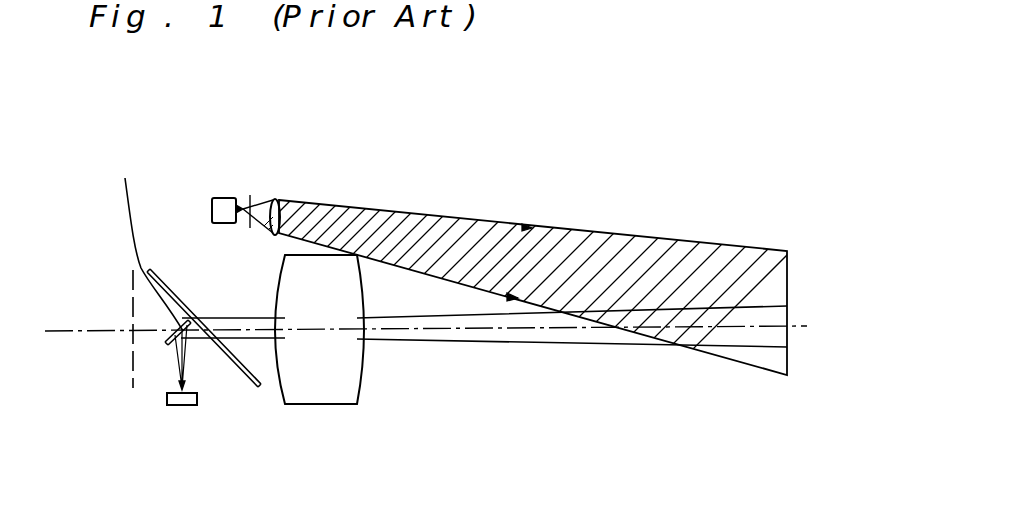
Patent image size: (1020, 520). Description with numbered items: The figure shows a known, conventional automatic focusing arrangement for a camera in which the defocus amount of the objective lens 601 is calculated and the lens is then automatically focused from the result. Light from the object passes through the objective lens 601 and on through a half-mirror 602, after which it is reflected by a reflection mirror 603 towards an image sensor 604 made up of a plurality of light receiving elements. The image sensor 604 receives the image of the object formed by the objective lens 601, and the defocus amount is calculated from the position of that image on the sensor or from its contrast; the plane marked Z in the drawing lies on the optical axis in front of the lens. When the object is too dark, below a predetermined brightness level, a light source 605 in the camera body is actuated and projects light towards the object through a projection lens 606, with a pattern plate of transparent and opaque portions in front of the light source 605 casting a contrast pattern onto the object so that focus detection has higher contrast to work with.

The objective lens 601 is at (335, 404).
The half-mirror 602 is at (174, 296).
The reflection mirror 603 is at (137, 237).
The image sensor 604 is at (190, 405).
The light source 605 is at (225, 198).
The projection lens 606 is at (279, 198).
The reference plane Z is at (131, 292).